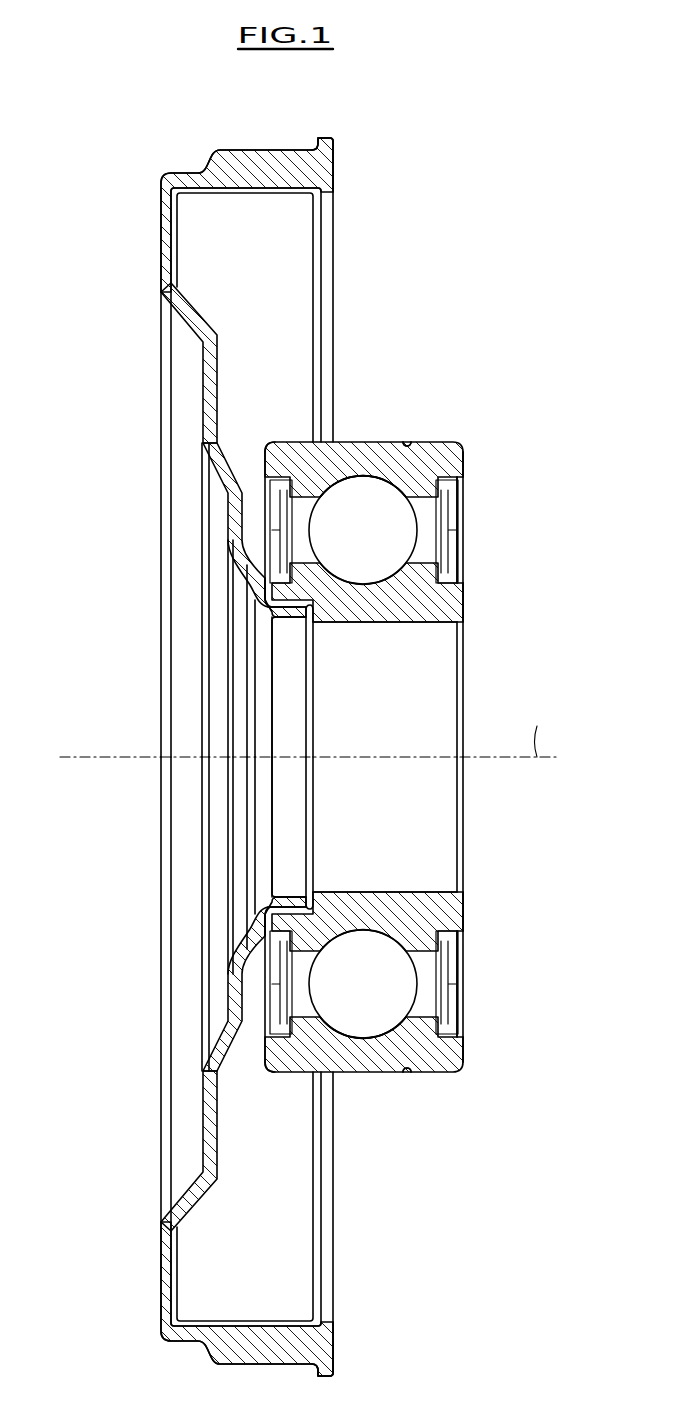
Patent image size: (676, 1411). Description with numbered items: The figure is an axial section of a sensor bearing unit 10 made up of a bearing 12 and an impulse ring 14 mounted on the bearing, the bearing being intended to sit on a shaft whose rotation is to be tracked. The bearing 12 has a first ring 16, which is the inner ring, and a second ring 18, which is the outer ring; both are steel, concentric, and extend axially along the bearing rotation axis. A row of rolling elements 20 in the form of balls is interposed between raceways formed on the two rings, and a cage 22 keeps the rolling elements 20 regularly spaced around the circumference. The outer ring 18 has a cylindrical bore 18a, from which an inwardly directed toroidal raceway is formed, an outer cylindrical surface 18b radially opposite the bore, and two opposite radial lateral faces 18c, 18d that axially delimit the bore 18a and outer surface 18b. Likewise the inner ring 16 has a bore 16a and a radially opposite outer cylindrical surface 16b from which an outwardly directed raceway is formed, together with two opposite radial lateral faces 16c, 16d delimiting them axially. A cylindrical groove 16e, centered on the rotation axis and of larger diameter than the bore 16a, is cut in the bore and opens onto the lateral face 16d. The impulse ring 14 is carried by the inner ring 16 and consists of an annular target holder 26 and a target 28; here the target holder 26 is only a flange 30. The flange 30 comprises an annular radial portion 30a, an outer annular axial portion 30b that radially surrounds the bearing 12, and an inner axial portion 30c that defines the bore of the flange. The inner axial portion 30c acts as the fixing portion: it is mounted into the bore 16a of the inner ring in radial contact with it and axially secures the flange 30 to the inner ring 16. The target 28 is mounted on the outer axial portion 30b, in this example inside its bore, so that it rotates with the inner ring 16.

The sensor bearing unit 10 is at (308, 738).
The bearing 12 is at (311, 690).
The impulse ring 14 is at (159, 265).
The first ring 16 is at (447, 905).
The bore 16a is at (396, 626).
The outer cylindrical surface 16b is at (461, 548).
The radial lateral face 16c is at (465, 600).
The radial lateral face 16d is at (266, 590).
The cylindrical groove 16e is at (267, 630).
The second ring 18 is at (455, 1052).
The bore 18a is at (322, 515).
The outer cylindrical surface 18b is at (433, 441).
The radial lateral face 18c is at (466, 464).
The radial lateral face 18d is at (262, 465).
The rolling elements 20 is at (376, 991).
The cage 22 is at (440, 998).
The target holder 26 is at (200, 1141).
The target 28 is at (332, 178).
The flange 30 is at (219, 1031).
The annular radial portion 30a is at (230, 526).
The outer annular axial portion 30b is at (265, 157).
The inner axial portion 30c is at (306, 609).